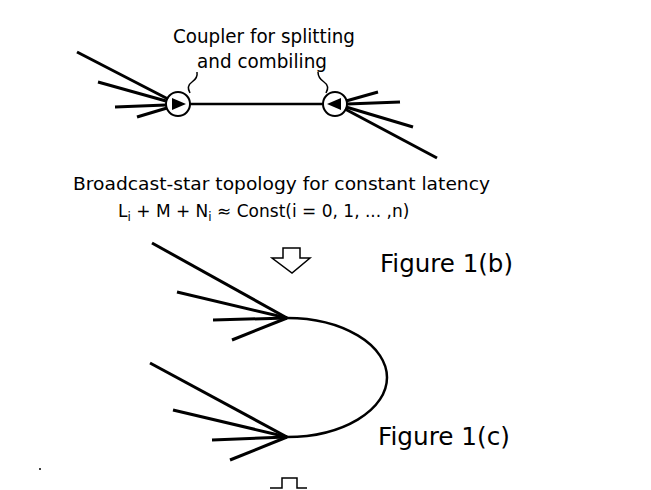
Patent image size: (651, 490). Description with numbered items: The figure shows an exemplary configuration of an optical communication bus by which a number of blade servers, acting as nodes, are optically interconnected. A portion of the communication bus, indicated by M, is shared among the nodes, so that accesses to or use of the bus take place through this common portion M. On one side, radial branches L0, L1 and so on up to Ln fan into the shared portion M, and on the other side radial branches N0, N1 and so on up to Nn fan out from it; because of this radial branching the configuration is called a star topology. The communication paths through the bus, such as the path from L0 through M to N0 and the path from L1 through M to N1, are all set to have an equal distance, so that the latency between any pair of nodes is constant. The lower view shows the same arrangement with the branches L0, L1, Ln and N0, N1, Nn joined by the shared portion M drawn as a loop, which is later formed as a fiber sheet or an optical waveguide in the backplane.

In FIG. 1B, the communication path branch L0 is at (109, 64).
In FIG. 1C, the communication path branch L0 is at (204, 279).
In FIG. 1B, the communication path branch L1 is at (119, 88).
In FIG. 1C, the communication path branch L1 is at (217, 301).
In FIG. 1B, the communication path branch Ln is at (141, 123).
In FIG. 1C, the communication path branch Ln is at (247, 342).
In FIG. 1B, the shared portion of the communication bus M is at (256, 91).
In FIG. 1C, the shared portion of the communication bus M is at (350, 377).
In FIG. 1B, the communication path branch N0 is at (370, 81).
In FIG. 1C, the communication path branch N0 is at (244, 461).
In FIG. 1B, the communication path branch N1 is at (386, 98).
In FIG. 1C, the communication path branch N1 is at (233, 444).
In FIG. 1B, the communication path branch Nn is at (404, 139).
In FIG. 1C, the communication path branch Nn is at (203, 396).